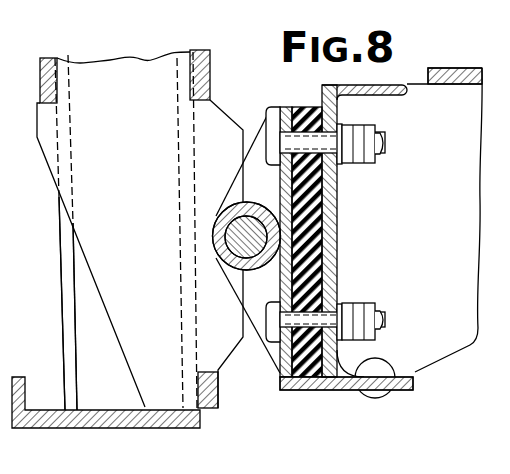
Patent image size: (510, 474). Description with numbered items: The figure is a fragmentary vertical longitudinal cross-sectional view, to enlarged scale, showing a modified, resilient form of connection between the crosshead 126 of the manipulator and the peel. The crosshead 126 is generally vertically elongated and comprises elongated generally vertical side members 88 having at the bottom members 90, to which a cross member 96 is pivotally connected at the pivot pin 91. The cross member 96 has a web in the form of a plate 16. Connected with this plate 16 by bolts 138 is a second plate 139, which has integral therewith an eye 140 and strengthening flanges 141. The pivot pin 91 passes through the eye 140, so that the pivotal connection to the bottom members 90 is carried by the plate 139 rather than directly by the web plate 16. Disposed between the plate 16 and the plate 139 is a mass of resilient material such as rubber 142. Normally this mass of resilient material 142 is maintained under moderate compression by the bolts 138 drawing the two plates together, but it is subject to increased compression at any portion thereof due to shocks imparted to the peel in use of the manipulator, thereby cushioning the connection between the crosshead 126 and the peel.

The plate 16 is at (337, 240).
The side members 88 is at (95, 351).
The bottom members 90 is at (105, 263).
The pivot pin 91 is at (225, 244).
The cross member 96 is at (404, 95).
The crosshead 126 is at (65, 313).
The bolts 138 is at (333, 120).
The plate 139 is at (285, 195).
The eye 140 is at (235, 267).
The strengthening flanges 141 is at (242, 186).
The resilient material 142 is at (320, 222).